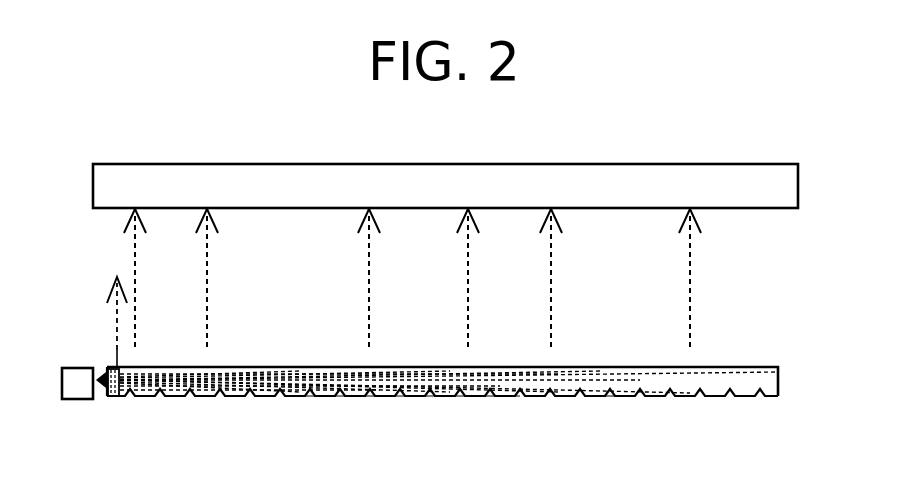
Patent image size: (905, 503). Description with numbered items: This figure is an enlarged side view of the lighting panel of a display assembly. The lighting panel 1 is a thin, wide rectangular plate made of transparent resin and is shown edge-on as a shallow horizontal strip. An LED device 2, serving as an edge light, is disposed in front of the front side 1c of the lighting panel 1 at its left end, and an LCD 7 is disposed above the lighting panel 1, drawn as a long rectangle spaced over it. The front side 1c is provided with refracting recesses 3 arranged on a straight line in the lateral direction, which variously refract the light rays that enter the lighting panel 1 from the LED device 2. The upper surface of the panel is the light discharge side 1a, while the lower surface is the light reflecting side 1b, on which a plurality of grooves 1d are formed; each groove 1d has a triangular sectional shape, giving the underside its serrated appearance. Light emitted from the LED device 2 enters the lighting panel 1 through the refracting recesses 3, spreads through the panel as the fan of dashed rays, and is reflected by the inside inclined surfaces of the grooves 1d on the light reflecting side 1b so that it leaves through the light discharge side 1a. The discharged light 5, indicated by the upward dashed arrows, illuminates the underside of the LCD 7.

The lighting panel 1 is at (715, 381).
The light discharge side 1a is at (725, 367).
The light reflecting side 1b is at (410, 397).
The front side 1c is at (97, 400).
The grooves 1d is at (607, 394).
The LED device 2 is at (78, 367).
The refracting recess 3 is at (114, 397).
The discharged light 5 is at (468, 265).
The LCD 7 is at (798, 176).